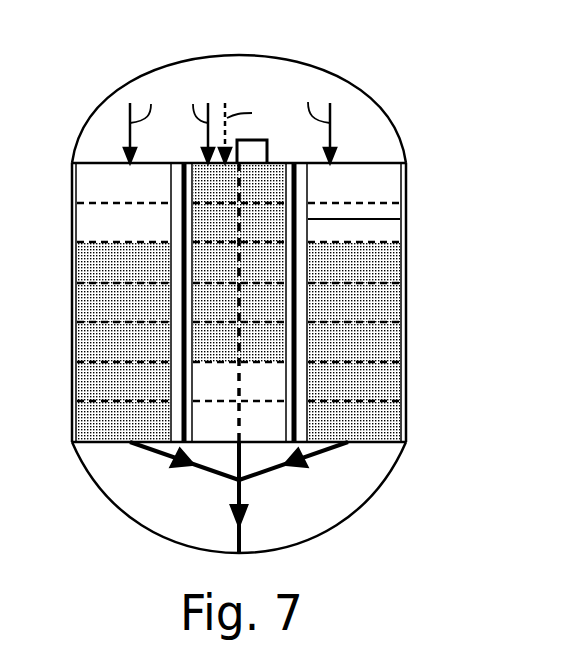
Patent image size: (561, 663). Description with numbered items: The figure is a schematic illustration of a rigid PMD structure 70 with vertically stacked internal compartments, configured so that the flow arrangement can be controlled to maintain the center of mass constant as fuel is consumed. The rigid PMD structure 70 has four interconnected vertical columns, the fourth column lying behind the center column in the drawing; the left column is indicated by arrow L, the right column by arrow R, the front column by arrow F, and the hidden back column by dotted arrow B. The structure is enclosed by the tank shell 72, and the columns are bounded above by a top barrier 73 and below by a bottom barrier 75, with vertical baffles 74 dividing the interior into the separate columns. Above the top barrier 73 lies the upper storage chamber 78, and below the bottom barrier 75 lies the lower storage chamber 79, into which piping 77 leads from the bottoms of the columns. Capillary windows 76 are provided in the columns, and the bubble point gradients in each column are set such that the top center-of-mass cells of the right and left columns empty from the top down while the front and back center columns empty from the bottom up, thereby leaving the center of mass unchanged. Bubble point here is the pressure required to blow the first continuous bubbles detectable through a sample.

The rigid PMD structure 70 is at (264, 279).
The tank shell 72 is at (114, 98).
The top barrier 73 is at (352, 163).
The vertical baffles 74 is at (400, 219).
The bottom barrier 75 is at (98, 442).
The capillary windows 76 is at (362, 283).
The piping 77 is at (320, 450).
The upper storage chamber 78 is at (254, 78).
The lower storage chamber 79 is at (239, 497).